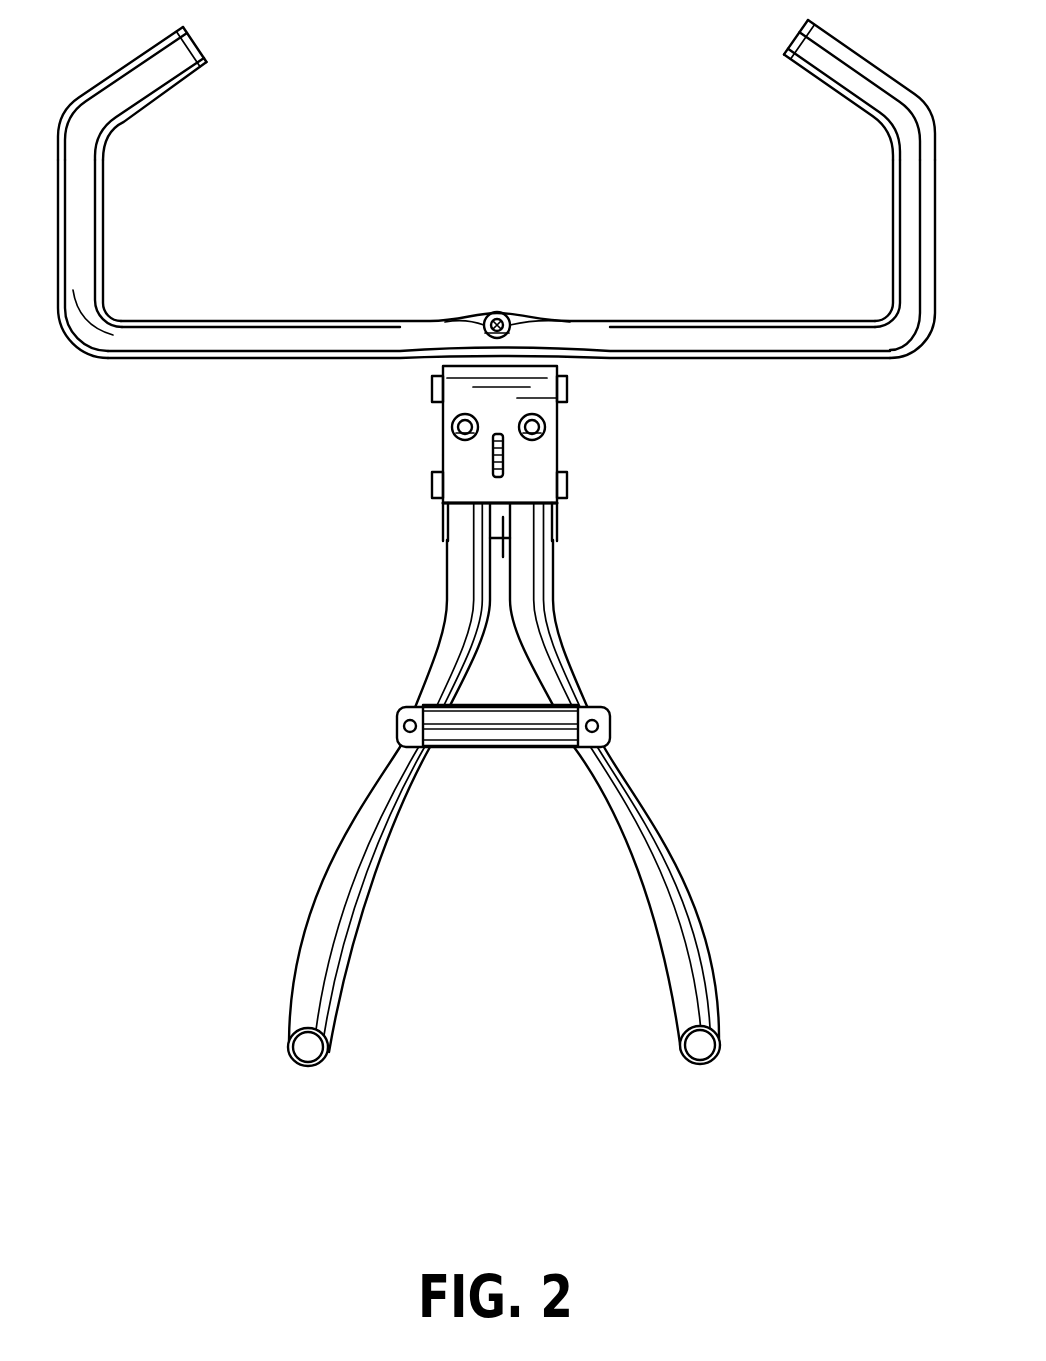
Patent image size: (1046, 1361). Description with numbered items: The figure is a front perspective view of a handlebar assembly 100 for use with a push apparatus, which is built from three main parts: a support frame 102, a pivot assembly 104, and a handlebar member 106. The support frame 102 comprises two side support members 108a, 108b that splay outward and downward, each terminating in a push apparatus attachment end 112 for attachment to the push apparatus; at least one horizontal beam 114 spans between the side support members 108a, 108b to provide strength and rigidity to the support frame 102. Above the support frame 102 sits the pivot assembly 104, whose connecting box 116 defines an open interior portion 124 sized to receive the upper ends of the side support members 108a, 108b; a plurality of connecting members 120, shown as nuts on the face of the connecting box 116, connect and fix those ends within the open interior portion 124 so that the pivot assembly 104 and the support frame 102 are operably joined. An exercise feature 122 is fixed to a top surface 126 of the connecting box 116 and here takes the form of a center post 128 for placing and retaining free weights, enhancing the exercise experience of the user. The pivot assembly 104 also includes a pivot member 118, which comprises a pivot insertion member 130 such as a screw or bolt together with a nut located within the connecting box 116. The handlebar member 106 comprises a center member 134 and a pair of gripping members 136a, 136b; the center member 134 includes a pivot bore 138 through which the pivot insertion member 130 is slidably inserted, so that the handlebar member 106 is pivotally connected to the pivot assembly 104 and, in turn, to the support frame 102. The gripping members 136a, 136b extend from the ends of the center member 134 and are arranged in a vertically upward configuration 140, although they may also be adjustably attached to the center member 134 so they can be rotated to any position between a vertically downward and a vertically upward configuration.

The handlebar assembly 100 is at (491, 595).
The support frame 102 is at (521, 768).
The pivot assembly 104 is at (496, 234).
The handlebar member 106 is at (287, 322).
The side support member 108a is at (357, 788).
The side support member 108b is at (640, 783).
The push apparatus attachment end 112 is at (310, 1067).
The horizontal beam 114 is at (487, 748).
The connecting box 116 is at (497, 506).
The pivot member 118 is at (512, 313).
The connecting members 120 is at (451, 430).
The exercise feature 122 is at (530, 503).
The open interior portion 124 is at (503, 520).
The top surface 126 is at (437, 520).
The center post 128 is at (462, 478).
The pivot insertion member 130 is at (487, 313).
The center member 134 is at (577, 333).
The gripping member 136a is at (103, 180).
The gripping member 136b is at (892, 203).
The pivot bore 138 is at (480, 323).
The vertically upward configuration 140 is at (172, 82).